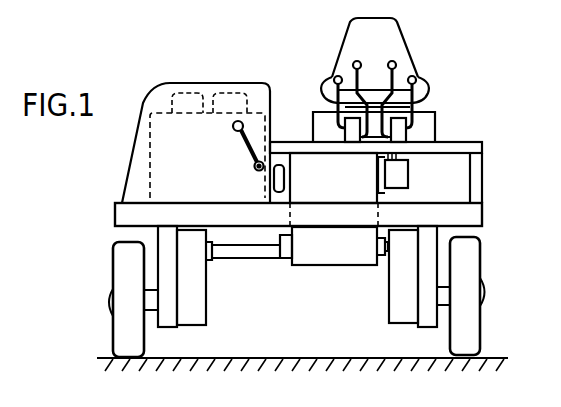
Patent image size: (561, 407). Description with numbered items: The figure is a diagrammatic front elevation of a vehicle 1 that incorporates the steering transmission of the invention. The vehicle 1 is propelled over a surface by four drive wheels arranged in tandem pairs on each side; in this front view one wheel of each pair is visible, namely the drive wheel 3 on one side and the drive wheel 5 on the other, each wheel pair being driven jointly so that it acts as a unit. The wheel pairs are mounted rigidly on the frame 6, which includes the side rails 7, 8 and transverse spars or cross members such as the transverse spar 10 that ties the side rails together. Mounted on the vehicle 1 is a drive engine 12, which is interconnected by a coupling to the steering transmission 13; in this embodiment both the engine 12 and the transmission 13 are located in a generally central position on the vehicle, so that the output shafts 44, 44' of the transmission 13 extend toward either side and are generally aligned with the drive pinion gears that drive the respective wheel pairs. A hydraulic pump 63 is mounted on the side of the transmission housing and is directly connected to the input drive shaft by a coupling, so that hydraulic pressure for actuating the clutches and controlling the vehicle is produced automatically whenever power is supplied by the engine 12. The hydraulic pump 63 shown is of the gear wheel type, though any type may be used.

The vehicle 1 is at (487, 71).
The drive wheel 3 is at (118, 335).
The drive wheel 5 is at (470, 327).
The frame 6 is at (501, 220).
The side rail 7 is at (172, 328).
The side rail 8 is at (427, 310).
The transverse spar 10 is at (125, 215).
The drive engine 12 is at (180, 130).
The steering transmission 13 is at (305, 167).
The output shaft 44 is at (385, 276).
The output shaft 44' is at (228, 277).
The hydraulic pump 63 is at (408, 174).